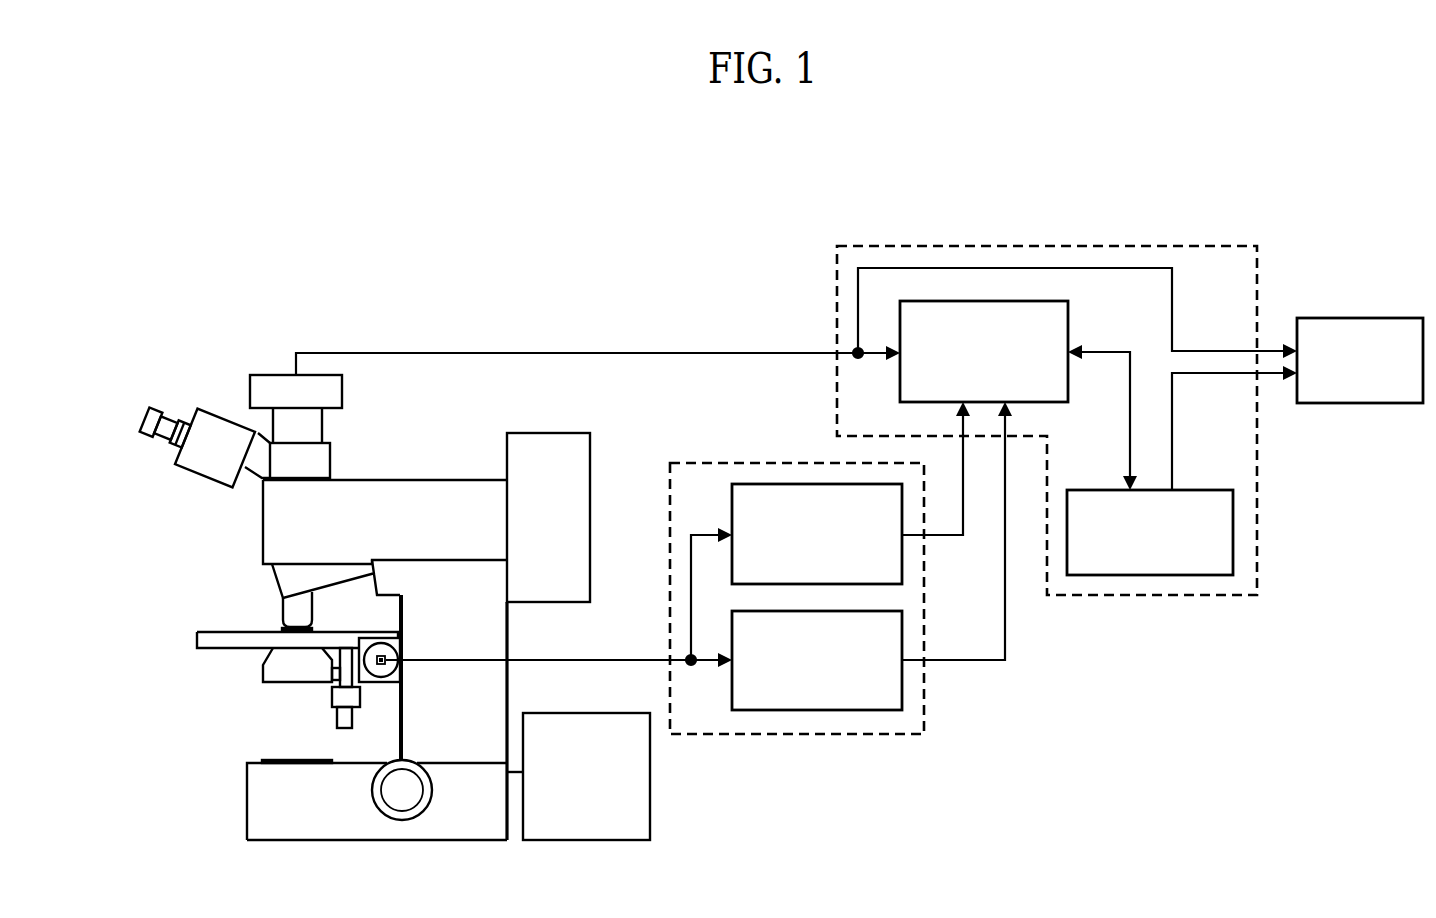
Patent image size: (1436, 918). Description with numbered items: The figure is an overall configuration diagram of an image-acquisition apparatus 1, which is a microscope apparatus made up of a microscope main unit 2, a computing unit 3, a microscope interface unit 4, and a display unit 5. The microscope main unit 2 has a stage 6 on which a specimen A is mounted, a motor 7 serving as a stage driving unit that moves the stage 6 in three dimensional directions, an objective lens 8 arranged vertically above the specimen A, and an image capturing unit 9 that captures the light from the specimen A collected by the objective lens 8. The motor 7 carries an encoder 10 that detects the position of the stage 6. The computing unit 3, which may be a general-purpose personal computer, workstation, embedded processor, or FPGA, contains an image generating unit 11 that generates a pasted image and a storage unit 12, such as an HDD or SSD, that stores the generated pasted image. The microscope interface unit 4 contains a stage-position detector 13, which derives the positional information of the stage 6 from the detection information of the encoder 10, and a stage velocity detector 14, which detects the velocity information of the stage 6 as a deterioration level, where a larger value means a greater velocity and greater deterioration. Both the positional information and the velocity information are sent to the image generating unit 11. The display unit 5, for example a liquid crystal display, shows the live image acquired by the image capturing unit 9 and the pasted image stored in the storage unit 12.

The image-acquisition apparatus 1 is at (1066, 152).
The microscope main unit 2 is at (427, 480).
The computing unit 3 is at (937, 245).
The microscope interface unit 4 is at (695, 463).
The display unit 5 is at (1357, 318).
The stage 6 is at (210, 632).
The motor 7 is at (380, 682).
The objective lens 8 is at (283, 600).
The image capturing unit 9 is at (267, 375).
The encoder 10 is at (381, 654).
The image generating unit 11 is at (1069, 317).
The storage unit 12 is at (1206, 490).
The stage-position detector 13 is at (796, 484).
The stage velocity detector 14 is at (819, 712).
The specimen A is at (312, 627).